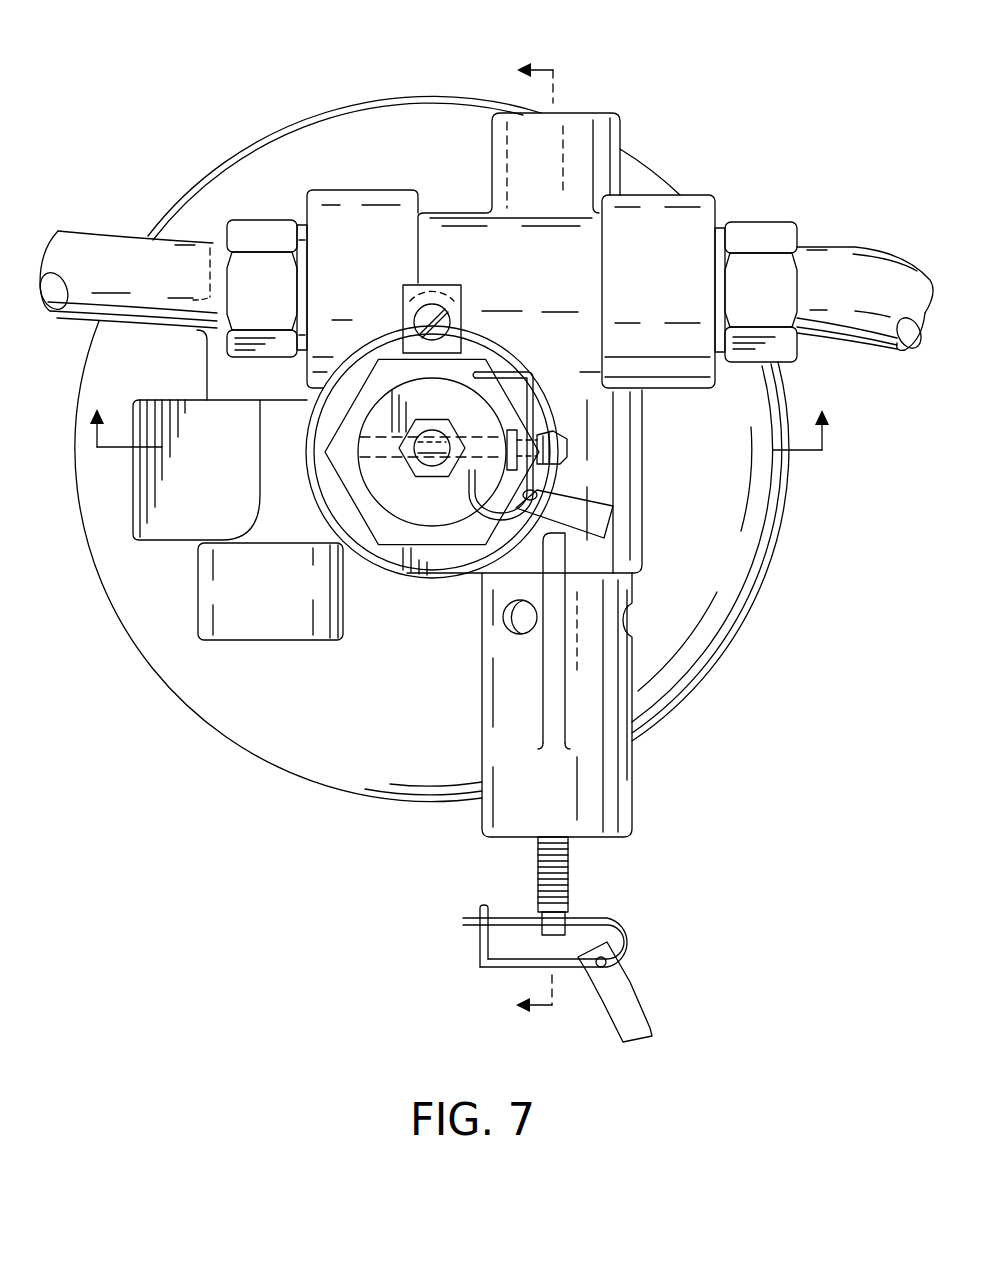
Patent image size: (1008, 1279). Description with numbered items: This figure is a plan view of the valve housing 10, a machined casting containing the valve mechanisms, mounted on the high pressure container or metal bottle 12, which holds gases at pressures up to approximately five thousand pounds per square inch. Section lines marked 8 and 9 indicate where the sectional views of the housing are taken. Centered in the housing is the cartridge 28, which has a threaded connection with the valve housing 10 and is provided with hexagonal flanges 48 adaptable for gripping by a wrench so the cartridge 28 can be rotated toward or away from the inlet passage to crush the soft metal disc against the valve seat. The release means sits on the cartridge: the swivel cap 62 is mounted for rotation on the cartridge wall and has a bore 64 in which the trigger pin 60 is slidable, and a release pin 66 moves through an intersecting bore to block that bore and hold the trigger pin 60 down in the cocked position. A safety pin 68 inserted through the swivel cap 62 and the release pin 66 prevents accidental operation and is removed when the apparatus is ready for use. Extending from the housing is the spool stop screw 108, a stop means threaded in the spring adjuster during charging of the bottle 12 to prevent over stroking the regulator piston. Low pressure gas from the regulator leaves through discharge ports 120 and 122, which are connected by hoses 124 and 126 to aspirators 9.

The valve housing 10 is at (574, 269).
The high pressure container or metal bottle 12 is at (292, 748).
The cartridge 28 is at (482, 752).
The hexagonal flanges 48 is at (340, 470).
The trigger pin 60 is at (432, 432).
The swivel cap 62 is at (378, 462).
The bore 64 is at (437, 467).
The release pin 66 is at (550, 450).
The safety pin 68 is at (556, 372).
The spool stop screw 108 is at (567, 860).
The discharge port 120 is at (358, 207).
The discharge port 122 is at (692, 212).
The hose 124 is at (100, 252).
The hose 126 is at (853, 263).
The section line 8- 8 is at (451, 441).
The aspirators 9 is at (534, 537).